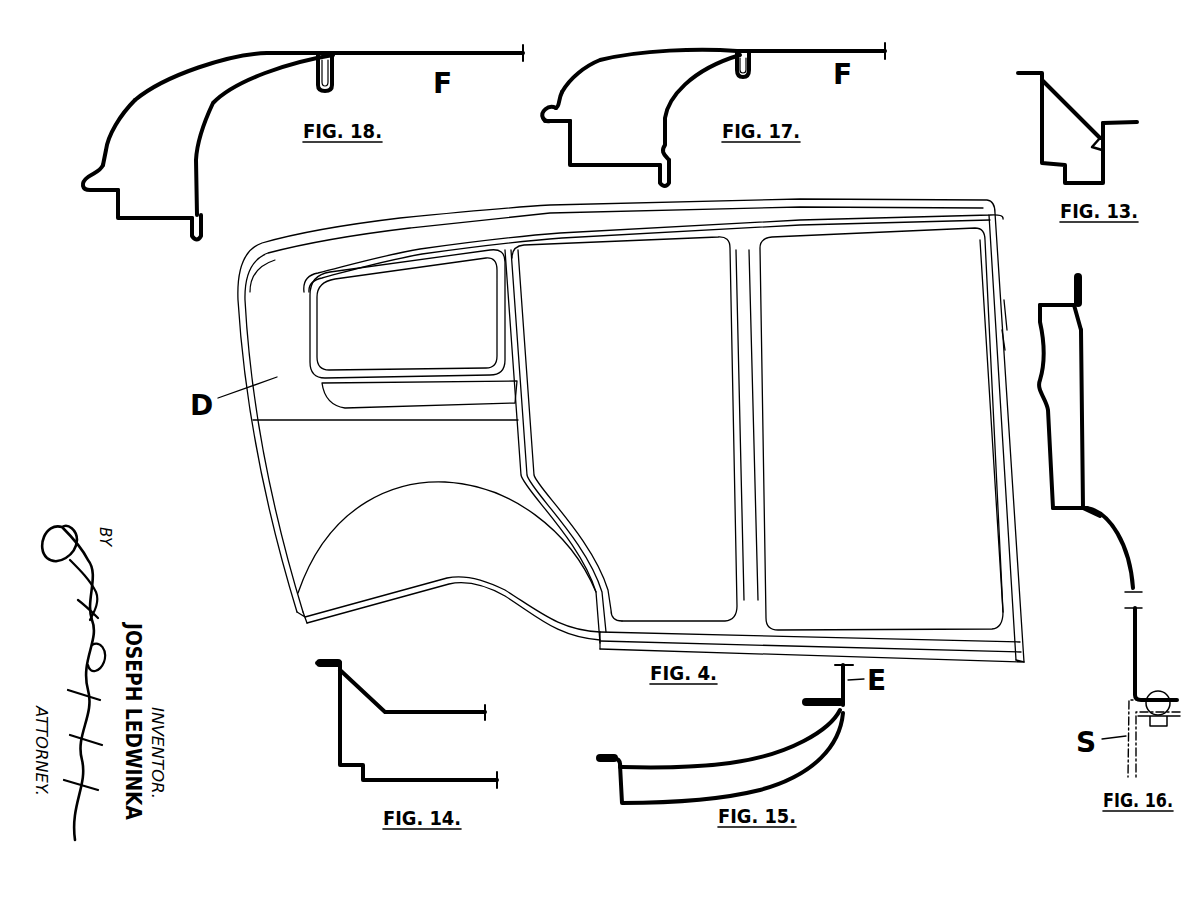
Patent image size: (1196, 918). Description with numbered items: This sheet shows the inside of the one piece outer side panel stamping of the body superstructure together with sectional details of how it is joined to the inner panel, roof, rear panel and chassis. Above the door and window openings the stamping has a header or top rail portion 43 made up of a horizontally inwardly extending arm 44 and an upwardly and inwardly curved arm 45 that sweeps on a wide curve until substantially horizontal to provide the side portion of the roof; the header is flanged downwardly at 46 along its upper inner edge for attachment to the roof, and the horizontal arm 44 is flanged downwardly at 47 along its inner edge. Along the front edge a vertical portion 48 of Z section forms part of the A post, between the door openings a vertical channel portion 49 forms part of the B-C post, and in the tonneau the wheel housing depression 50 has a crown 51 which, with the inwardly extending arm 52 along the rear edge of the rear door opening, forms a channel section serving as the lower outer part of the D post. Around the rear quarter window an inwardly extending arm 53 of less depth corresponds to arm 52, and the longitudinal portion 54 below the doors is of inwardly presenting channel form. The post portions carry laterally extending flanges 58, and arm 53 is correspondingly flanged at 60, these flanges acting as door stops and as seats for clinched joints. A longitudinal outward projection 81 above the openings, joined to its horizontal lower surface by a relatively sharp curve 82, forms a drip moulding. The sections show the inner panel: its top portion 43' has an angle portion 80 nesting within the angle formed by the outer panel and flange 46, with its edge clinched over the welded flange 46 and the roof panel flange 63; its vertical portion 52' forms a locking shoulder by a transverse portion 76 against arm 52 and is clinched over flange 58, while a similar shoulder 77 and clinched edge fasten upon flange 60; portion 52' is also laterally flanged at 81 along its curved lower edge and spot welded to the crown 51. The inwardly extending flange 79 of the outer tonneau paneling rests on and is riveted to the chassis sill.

In FIG. 18, the header or top rail portion 43 is at (97, 132).
In FIG. 17, the header or top rail portion 43 is at (541, 91).
In FIG. 4, the header or top rail portion 43 is at (396, 229).
In FIG. 18, the longitudinal top portion of inner panel stamping 43' is at (264, 135).
In FIG. 18, the horizontally inwardly extending arm 44 is at (155, 222).
In FIG. 17, the horizontally inwardly extending arm 44 is at (601, 167).
In FIG. 18, the upwardly and inwardly curved arm 45 is at (165, 83).
In FIG. 17, the upwardly and inwardly curved arm 45 is at (587, 66).
In FIG. 18, the downward flange 46 is at (320, 80).
In FIG. 17, the downward flange 46 is at (737, 62).
In FIG. 15, the downward flange 46 is at (800, 704).
In FIG. 4, the downward flange 46 is at (265, 488).
In FIG. 18, the downward flange of horizontal branch 47 is at (190, 240).
In FIG. 17, the downward flange of horizontal branch 47 is at (662, 184).
In FIG. 4, the vertical portion of Z section 48 is at (1010, 473).
In FIG. 4, the vertical portion of channel cross section 49 is at (748, 418).
In FIG. 16, the wheel housing depression 50 is at (1136, 576).
In FIG. 4, the wheel housing depression 50 is at (448, 593).
In FIG. 16, the crown of wheel housing 51 is at (1083, 513).
In FIG. 4, the crown of wheel housing 51 is at (492, 490).
In FIG. 13, the inwardly extending arm 52 is at (1047, 128).
In FIG. 14, the inwardly extending arm 52 is at (388, 721).
In FIG. 4, the inwardly extending arm 52 is at (563, 446).
In FIG. 16, the vertical portion of inner panel stamping 52' is at (1084, 406).
In FIG. 14, the vertical portion of inner panel stamping 52' is at (412, 684).
In FIG. 13, the inwardly extending arm around rear quarter window 53 is at (1096, 142).
In FIG. 16, the inwardly extending arm around rear quarter window 53 is at (1051, 304).
In FIG. 15, the inwardly extending arm around rear quarter window 53 is at (618, 797).
In FIG. 4, the longitudinally extending portion below door openings 54 is at (755, 639).
In FIG. 14, the laterally extending flange 58 is at (324, 668).
In FIG. 13, the flange of arm around rear quarter window 60 is at (1122, 138).
In FIG. 16, the flange of arm around rear quarter window 60 is at (1084, 295).
In FIG. 15, the flange of arm around rear quarter window 60 is at (613, 755).
In FIG. 17, the flange of roof panel 63 is at (750, 66).
In FIG. 14, the transversely extending portion 76 is at (343, 668).
In FIG. 13, the shoulder 77 is at (1094, 149).
In FIG. 16, the shoulder 77 is at (1080, 313).
In FIG. 15, the shoulder 77 is at (626, 761).
In FIG. 16, the inwardly extending flange 79 is at (1163, 694).
In FIG. 4, the inwardly extending flange 79 is at (533, 613).
In FIG. 18, the angle portion 80 is at (316, 62).
In FIG. 17, the angle portion 80 is at (735, 57).
In FIG. 15, the angle portion 80 is at (838, 712).
In FIG. 18, the outward projection / lateral flange 81 is at (85, 175).
In FIG. 17, the outward projection / lateral flange 81 is at (544, 111).
In FIG. 16, the outward projection / lateral flange 81 is at (1094, 513).
In FIG. 17, the relatively sharp curve 82 is at (546, 120).